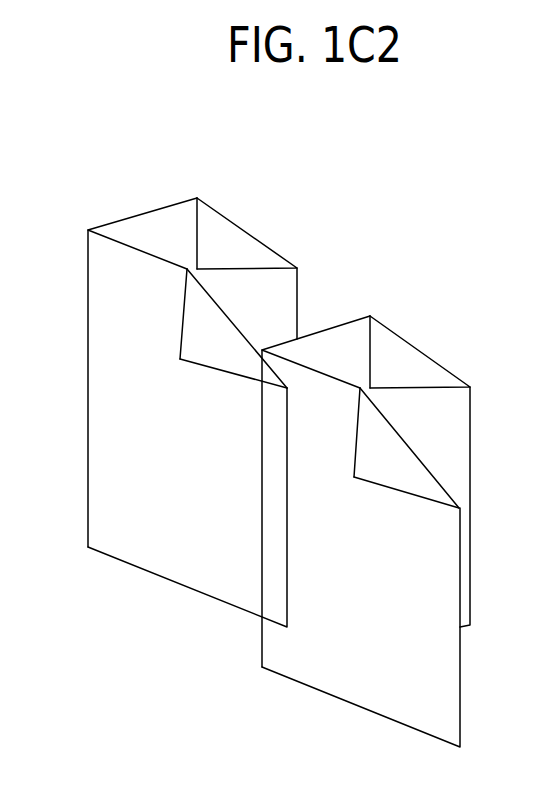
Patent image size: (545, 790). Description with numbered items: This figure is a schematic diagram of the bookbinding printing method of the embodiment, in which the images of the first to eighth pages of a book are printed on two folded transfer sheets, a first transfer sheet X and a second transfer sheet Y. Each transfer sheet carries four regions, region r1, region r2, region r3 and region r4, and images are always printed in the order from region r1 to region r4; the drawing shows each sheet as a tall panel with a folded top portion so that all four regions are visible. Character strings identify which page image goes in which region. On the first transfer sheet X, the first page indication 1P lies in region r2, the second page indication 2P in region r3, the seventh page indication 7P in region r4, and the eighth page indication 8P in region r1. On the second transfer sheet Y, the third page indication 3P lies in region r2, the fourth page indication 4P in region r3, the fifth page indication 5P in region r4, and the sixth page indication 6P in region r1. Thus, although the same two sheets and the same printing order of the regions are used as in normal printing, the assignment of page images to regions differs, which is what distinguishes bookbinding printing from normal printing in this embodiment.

The first transfer sheet X is at (126, 208).
The second transfer sheet Y is at (453, 355).
The region r1 is at (218, 227).
The region r2 is at (97, 391).
The region r3 is at (192, 313).
The region r4 is at (287, 284).
The first page image indication 1P is at (187, 507).
The second page image indication 2P is at (233, 360).
The third page image indication 3P is at (361, 627).
The fourth page image indication 4P is at (406, 479).
The fifth page image indication 5P is at (409, 448).
The sixth page image indication 6P is at (420, 352).
The seventh page image indication 7P is at (237, 328).
The eighth page image indication 8P is at (247, 233).